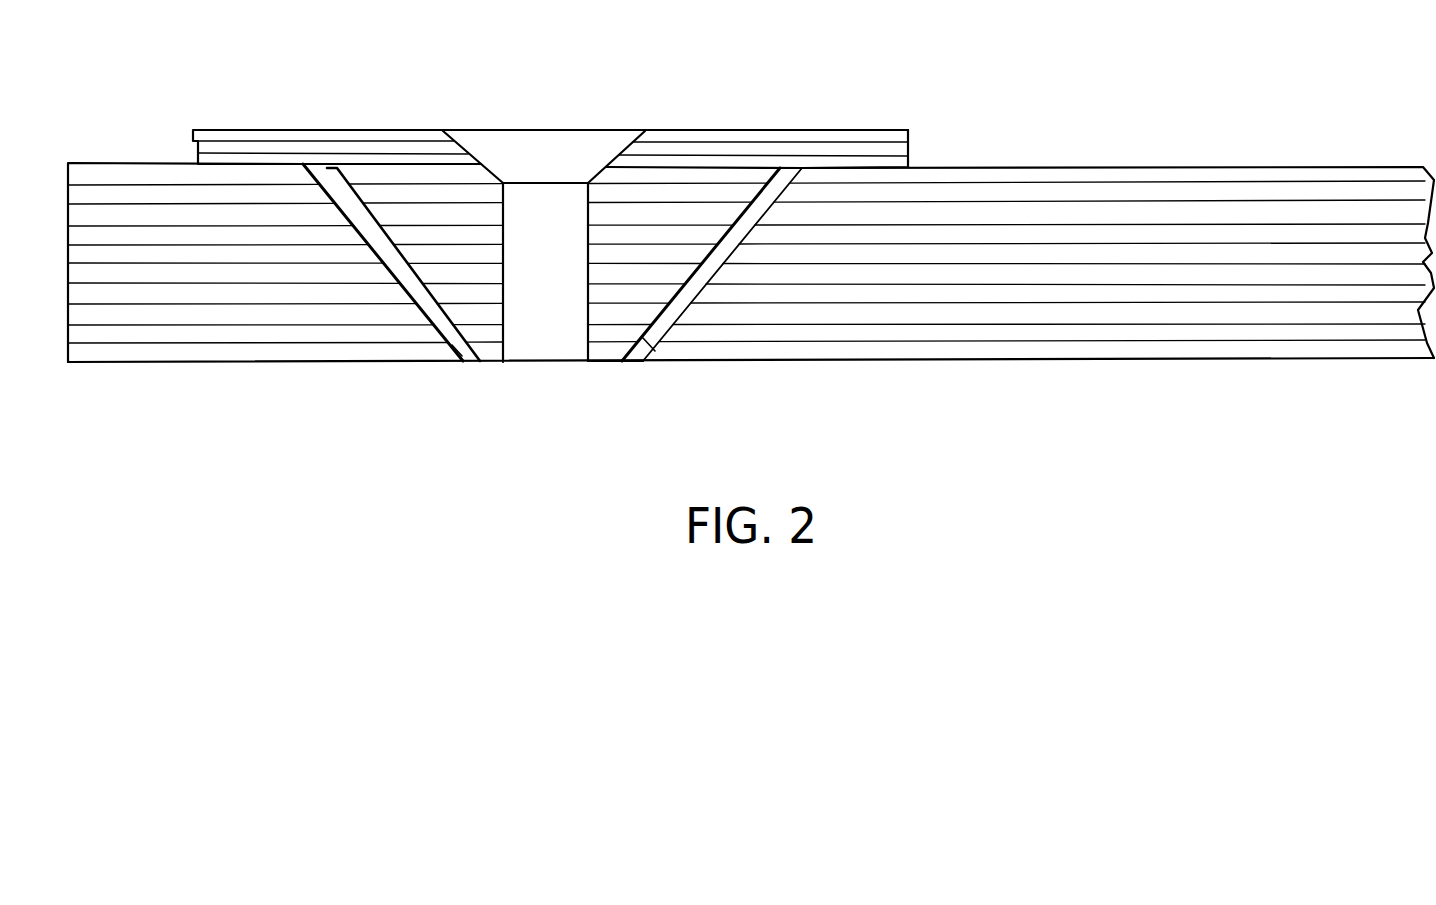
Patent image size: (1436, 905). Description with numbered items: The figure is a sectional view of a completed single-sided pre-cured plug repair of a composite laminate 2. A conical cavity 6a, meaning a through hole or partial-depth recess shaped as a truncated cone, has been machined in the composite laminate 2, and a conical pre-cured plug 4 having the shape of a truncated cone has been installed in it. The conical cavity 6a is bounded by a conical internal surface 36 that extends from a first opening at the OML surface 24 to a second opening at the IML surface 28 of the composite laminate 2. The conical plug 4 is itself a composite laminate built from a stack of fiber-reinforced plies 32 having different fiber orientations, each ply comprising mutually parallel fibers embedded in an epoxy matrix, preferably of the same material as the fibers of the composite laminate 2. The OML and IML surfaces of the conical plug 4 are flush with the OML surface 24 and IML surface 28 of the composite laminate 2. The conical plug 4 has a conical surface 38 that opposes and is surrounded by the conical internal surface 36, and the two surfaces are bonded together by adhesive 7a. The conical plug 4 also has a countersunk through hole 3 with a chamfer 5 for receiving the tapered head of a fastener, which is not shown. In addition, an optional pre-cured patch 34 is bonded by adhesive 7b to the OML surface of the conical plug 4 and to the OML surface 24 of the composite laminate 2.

The composite laminate 2 is at (107, 160).
The countersunk through hole 3 is at (537, 342).
The conical plug 4 is at (603, 366).
The chamfer 5 is at (593, 147).
The conical cavity 6a is at (715, 273).
The adhesive 7a is at (455, 348).
The adhesive 7b is at (908, 158).
The OML surface 24 is at (1228, 167).
The IML surface 28 is at (1250, 360).
The fiber-reinforced plies 32 is at (290, 148).
The pre-cured patch 34 is at (826, 124).
The conical internal surface 36 is at (312, 162).
The conical surface 38 is at (435, 308).